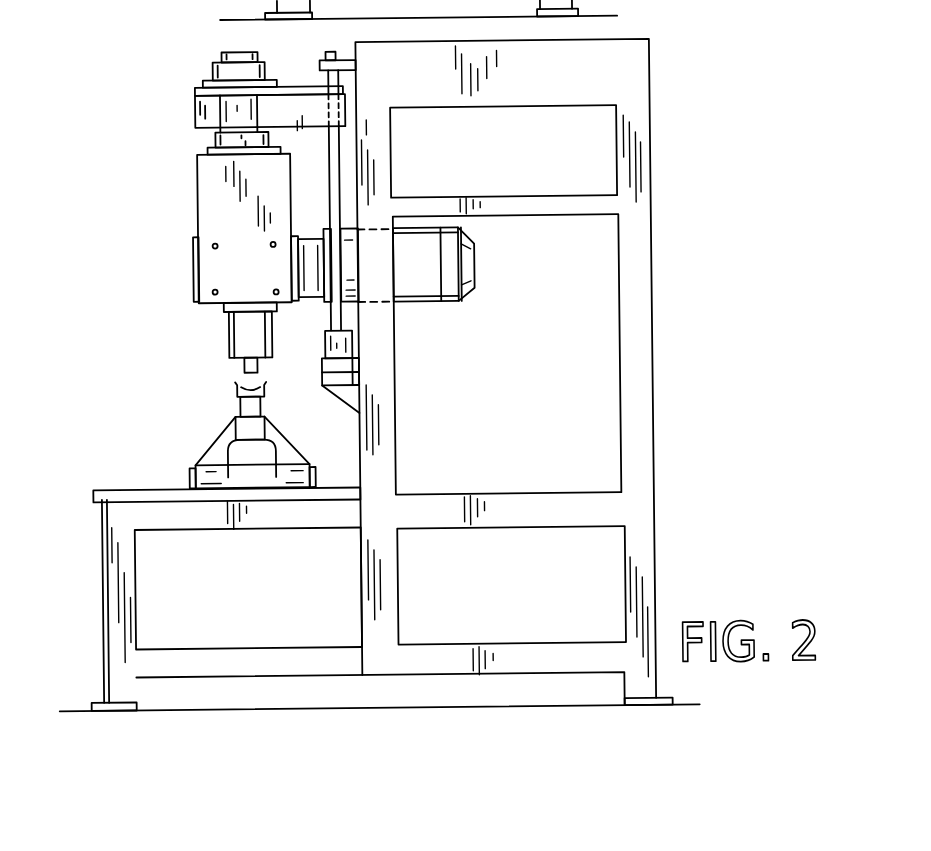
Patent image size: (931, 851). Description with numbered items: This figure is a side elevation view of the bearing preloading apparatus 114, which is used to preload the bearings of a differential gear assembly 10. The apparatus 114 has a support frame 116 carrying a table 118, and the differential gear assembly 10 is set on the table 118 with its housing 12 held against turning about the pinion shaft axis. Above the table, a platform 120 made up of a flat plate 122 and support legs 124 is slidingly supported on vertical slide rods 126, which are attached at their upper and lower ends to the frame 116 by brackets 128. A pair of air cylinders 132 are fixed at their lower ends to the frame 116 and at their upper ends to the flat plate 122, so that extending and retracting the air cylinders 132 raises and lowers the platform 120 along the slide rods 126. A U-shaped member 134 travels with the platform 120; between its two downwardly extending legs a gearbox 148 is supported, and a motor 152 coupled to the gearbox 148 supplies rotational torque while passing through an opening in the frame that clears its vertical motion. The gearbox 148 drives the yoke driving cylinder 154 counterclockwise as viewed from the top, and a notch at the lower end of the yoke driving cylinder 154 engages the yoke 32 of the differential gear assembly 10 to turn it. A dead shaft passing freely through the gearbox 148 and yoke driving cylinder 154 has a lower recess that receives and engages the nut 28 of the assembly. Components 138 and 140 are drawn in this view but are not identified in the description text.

The differential gear assembly 10 is at (228, 436).
The housing 12 is at (215, 452).
The nut 28 is at (239, 391).
The yoke 32 is at (235, 381).
The apparatus 114 is at (679, 191).
The support frame 116 is at (653, 308).
The table 118 is at (137, 487).
The platform 120 is at (192, 106).
The flat plate 122 is at (200, 91).
The support legs 124 is at (200, 110).
The slide rods 126 is at (335, 170).
The brackets 128 is at (321, 55).
The air cylinders 132 is at (326, 346).
The U-shaped member 134 is at (223, 178).
The bearing collars 138 is at (231, 53).
The actuating cylinder 140 is at (216, 66).
The gearbox 148 is at (197, 265).
The motor 152 is at (474, 248).
The yoke driving cylinder 154 is at (248, 328).